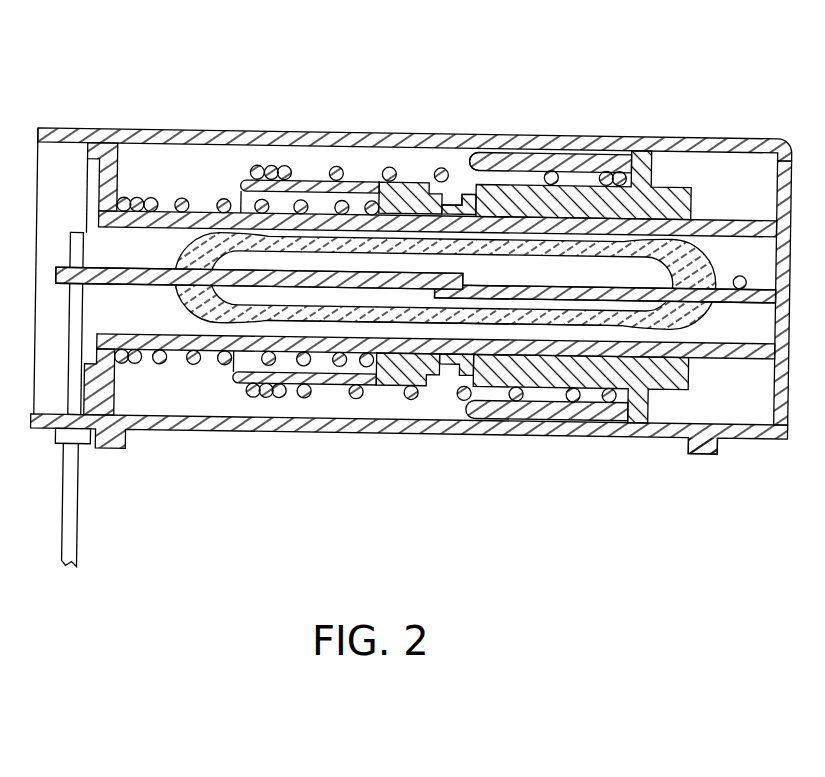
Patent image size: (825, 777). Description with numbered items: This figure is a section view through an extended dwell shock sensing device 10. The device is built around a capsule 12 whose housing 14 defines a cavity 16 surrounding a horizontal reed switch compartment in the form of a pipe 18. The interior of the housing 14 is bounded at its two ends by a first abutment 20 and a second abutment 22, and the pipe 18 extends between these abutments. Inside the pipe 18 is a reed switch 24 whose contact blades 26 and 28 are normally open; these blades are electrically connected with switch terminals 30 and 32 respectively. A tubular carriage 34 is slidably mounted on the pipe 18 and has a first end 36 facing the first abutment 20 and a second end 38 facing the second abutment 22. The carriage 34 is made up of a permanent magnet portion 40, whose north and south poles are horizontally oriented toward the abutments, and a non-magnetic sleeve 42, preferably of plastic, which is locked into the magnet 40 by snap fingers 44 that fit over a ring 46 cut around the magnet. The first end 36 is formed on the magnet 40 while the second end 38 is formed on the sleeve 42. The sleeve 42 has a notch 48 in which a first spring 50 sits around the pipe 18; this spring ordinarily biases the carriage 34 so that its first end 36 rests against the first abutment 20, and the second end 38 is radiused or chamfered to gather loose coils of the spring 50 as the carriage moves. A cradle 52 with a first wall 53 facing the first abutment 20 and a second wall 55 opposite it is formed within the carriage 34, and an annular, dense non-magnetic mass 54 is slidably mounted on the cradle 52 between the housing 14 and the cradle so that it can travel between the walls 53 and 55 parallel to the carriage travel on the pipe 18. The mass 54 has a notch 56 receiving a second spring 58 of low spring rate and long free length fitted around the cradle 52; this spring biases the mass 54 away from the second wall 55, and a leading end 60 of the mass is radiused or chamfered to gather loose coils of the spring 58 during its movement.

The extended dwell shock sensing device 10 is at (573, 126).
The capsule 12 is at (747, 128).
The housing 14 is at (195, 430).
The cavity 16 is at (170, 176).
The pipe 18 is at (313, 320).
The first abutment 20 is at (792, 215).
The second abutment 22 is at (143, 128).
The reed switch 24 is at (337, 350).
The contact blade 26 is at (245, 237).
The contact blade 28 is at (548, 300).
The switch terminal 30 is at (85, 552).
The switch terminal 32 is at (742, 266).
The tubular carriage 34 is at (441, 388).
The first end 36 is at (708, 446).
The second end 38 is at (250, 396).
The permanent magnet portion 40 is at (504, 392).
The non-magnetic sleeve 42 is at (403, 388).
The snap fingers 44 is at (461, 190).
The ring 46 is at (452, 190).
The notch 48 is at (328, 181).
The first spring 50 is at (160, 364).
The cradle 52 is at (313, 181).
The first wall 53 is at (690, 175).
The non-magnetic mass 54 is at (552, 150).
The second wall 55 is at (236, 196).
The notch 56 is at (607, 163).
The second spring 58 is at (392, 163).
The leading end 60 is at (471, 154).